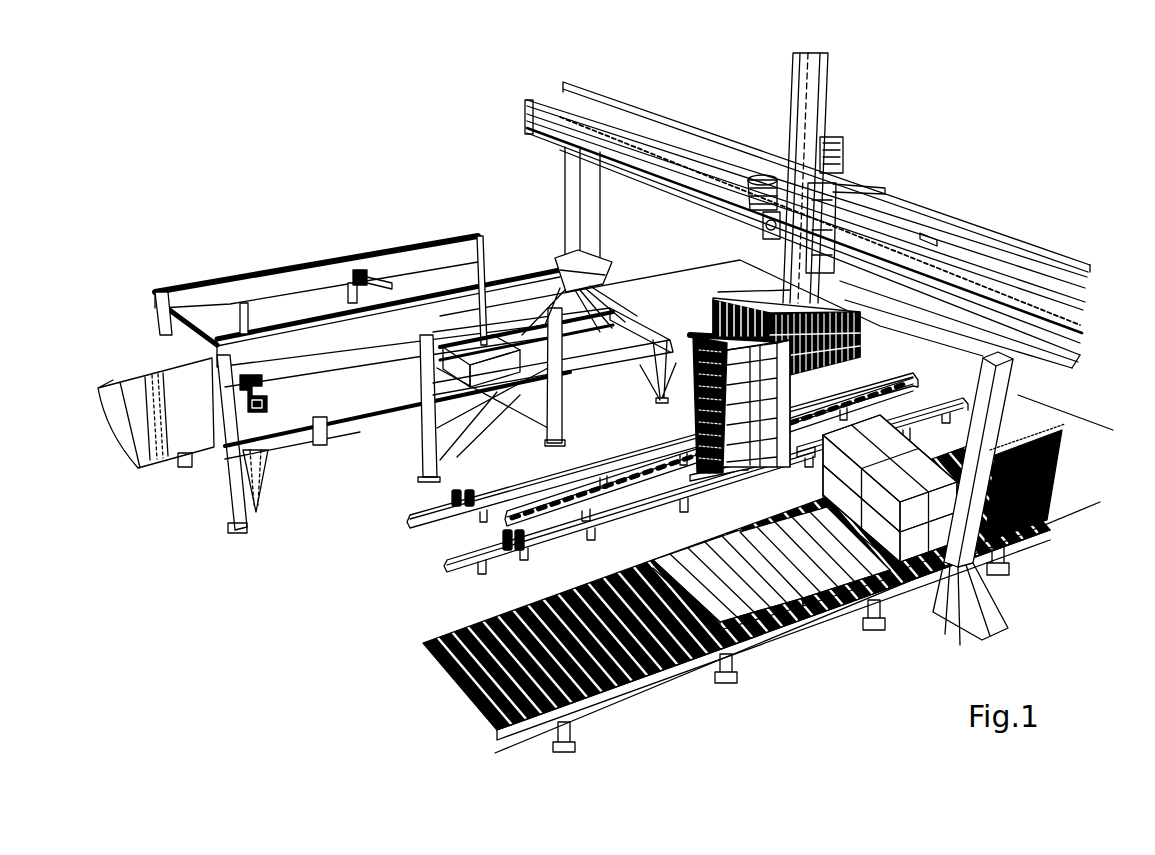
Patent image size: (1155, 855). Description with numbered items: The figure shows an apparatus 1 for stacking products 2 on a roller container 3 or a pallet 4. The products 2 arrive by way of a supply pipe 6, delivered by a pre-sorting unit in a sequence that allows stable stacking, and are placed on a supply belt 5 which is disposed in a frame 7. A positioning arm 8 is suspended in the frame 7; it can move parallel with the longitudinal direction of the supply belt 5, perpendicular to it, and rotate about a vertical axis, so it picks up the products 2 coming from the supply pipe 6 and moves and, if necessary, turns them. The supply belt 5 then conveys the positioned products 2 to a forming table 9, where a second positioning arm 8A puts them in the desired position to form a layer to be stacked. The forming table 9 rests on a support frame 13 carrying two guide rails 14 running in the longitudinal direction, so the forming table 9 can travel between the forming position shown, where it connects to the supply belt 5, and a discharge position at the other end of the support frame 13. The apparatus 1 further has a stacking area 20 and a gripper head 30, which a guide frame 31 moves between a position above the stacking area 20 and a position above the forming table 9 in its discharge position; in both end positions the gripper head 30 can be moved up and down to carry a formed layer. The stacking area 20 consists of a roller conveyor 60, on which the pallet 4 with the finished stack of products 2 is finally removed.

The apparatus 1 is at (1005, 123).
The products 2 is at (778, 448).
The roller container 3 is at (742, 468).
The pallet 4 is at (910, 563).
The supply belt 5 is at (322, 417).
The supply pipe 6 is at (197, 443).
The frame 7 is at (268, 290).
The positioning arm 8 is at (266, 395).
The second positioning arm 8A is at (478, 345).
The forming table 9 is at (441, 333).
The support frame 13 is at (643, 330).
The guide rails 14 is at (567, 258).
The stacking area 20 is at (1062, 512).
The gripper head 30 is at (830, 306).
The guide frame 31 is at (973, 237).
The roller conveyor 60 is at (1000, 393).